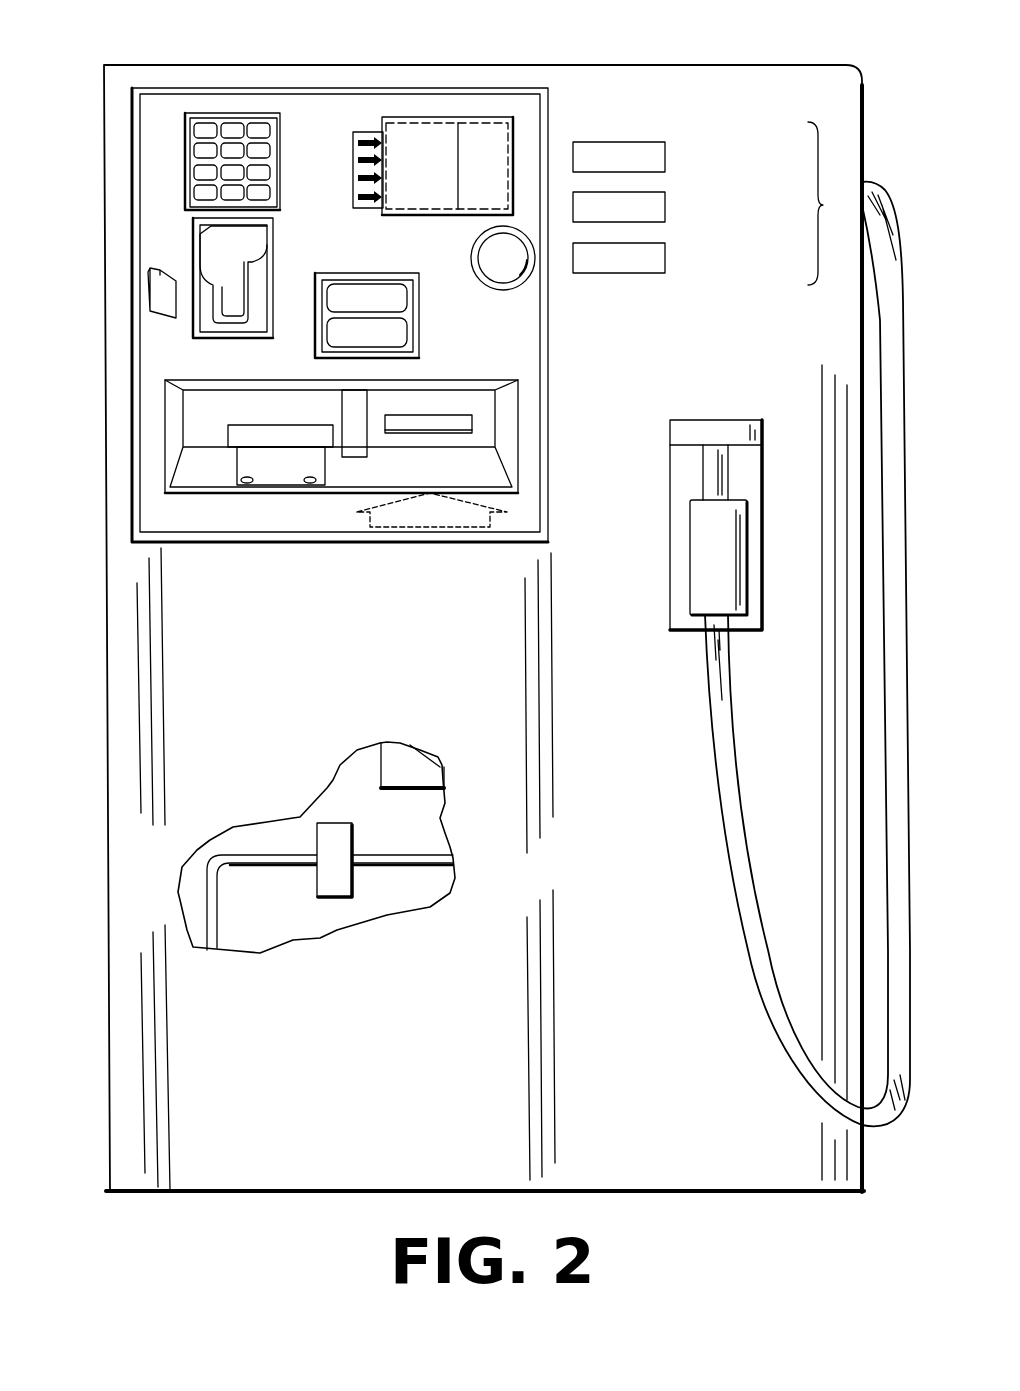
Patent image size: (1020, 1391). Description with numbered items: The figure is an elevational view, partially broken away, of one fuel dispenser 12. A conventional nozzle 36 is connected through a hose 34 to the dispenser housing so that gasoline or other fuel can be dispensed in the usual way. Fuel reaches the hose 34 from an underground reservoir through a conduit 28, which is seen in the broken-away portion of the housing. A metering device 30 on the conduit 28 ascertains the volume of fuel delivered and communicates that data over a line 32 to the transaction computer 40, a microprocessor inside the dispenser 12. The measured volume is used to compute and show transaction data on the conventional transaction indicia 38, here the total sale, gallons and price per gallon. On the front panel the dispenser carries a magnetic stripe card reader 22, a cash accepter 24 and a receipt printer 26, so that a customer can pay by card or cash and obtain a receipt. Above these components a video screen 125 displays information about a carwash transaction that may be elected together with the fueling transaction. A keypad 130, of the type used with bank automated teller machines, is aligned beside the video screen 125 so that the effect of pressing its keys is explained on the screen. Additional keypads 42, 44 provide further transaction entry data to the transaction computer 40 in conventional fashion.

The dispenser 12 is at (560, 48).
The magnetic stripe card reader 22 is at (210, 243).
The cash accepter 24 is at (242, 437).
The receipt printer 26 is at (393, 425).
The conduit 28 is at (207, 870).
The metering device 30 is at (313, 830).
The line 32 is at (378, 808).
The hose 34 is at (883, 1123).
The nozzle 36 is at (730, 593).
The transaction indicia 38 is at (823, 205).
The transaction computer 40 is at (417, 757).
The keypad 42 is at (210, 122).
The keypad 44 is at (337, 343).
The video screen 125 is at (487, 116).
The keypad 130 is at (370, 124).